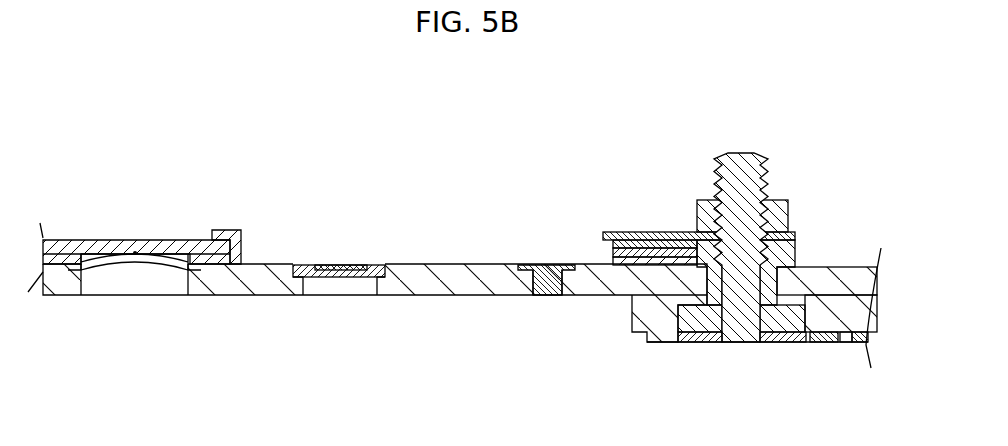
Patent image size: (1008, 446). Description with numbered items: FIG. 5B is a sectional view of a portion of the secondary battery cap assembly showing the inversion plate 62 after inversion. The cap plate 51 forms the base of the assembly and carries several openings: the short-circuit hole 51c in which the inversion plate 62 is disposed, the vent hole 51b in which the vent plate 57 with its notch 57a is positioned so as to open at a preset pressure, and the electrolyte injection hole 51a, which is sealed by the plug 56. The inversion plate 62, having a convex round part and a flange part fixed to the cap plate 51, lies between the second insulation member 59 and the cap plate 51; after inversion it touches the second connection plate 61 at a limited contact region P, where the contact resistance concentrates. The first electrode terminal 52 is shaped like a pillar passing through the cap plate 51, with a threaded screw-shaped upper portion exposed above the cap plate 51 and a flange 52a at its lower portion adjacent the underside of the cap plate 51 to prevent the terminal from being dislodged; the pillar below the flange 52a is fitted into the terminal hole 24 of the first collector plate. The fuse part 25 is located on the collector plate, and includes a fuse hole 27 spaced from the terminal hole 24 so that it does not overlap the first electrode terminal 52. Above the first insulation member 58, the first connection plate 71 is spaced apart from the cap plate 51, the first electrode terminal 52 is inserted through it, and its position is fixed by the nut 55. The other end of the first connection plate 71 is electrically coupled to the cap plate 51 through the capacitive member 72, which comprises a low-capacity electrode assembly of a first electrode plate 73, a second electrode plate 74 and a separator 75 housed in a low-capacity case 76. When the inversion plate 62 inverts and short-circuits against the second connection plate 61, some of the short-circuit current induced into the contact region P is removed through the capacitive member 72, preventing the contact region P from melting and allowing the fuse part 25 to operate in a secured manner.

The cap plate 51 is at (428, 265).
The electrolyte injection hole 51a is at (543, 297).
The vent hole 51b is at (312, 298).
The short-circuit hole 51c is at (190, 297).
The first electrode terminal 52 is at (721, 254).
The flange 52a is at (677, 318).
The nut 55 is at (775, 200).
The plug 56 is at (538, 266).
The vent plate 57 is at (375, 265).
The notch 57a is at (328, 265).
The first insulation member 58 is at (796, 263).
The second insulation member 59 is at (226, 230).
The second connection plate 61 is at (82, 240).
The inversion plate 62 is at (172, 255).
The contact region P is at (135, 251).
The first connection plate 71 is at (684, 235).
The capacitive member 72 is at (673, 150).
The first electrode plate 73 is at (660, 243).
The second electrode plate 74 is at (617, 232).
The separator 75 is at (645, 252).
The low-capacity case 76 is at (605, 259).
The terminal hole 24 is at (738, 343).
The fuse hole 27 is at (845, 343).
The fuse part 25 is at (850, 343).